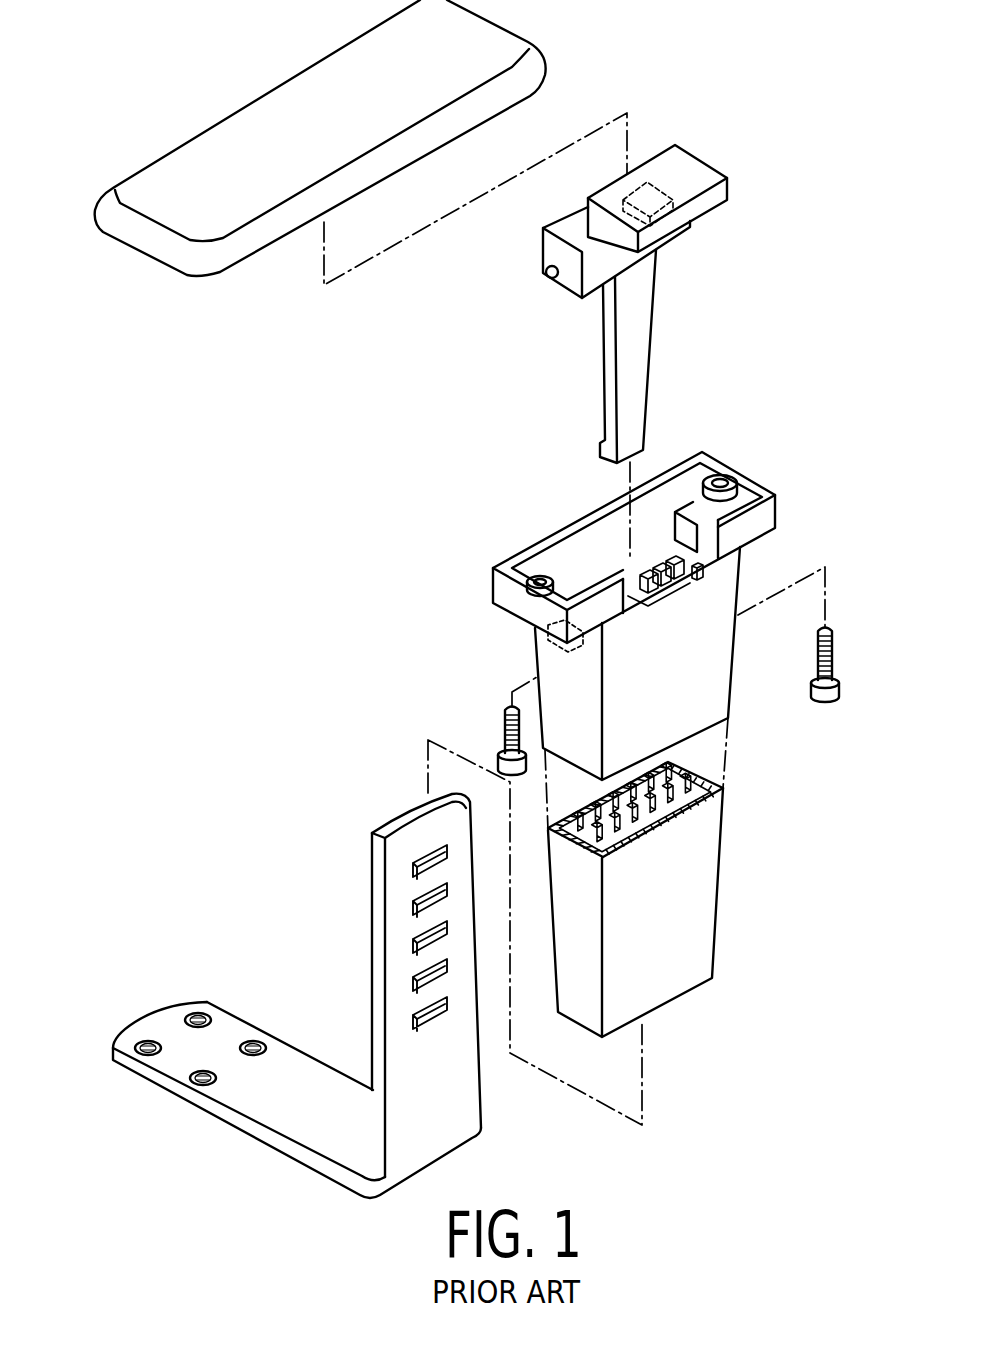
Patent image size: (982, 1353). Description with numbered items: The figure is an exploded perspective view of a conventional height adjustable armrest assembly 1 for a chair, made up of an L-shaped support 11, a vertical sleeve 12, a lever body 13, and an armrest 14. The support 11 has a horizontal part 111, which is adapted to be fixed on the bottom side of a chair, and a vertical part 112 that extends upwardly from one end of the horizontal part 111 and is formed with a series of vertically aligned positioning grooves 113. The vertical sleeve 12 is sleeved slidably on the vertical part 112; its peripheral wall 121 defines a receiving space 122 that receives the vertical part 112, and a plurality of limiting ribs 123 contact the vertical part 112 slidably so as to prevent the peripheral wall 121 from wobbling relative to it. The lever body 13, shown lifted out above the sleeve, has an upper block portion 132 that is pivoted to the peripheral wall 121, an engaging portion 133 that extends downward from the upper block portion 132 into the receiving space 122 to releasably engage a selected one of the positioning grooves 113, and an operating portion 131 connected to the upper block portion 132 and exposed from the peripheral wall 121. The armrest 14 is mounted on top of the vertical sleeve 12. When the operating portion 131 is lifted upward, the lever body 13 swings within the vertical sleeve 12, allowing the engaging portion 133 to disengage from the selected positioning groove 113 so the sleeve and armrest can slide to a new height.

The height adjustable armrest assembly 1 is at (272, 440).
The L-shaped support 11 is at (294, 996).
The horizontal part 111 is at (183, 1053).
The vertical part 112 is at (400, 873).
The positioning grooves 113 is at (418, 902).
The vertical sleeve 12 is at (624, 744).
The peripheral wall 121 is at (690, 935).
The receiving space 122 is at (587, 573).
The limiting ribs 123 is at (700, 777).
The lever body 13 is at (631, 286).
The operating portion 131 is at (685, 172).
The upper block portion 132 is at (587, 272).
The engaging portion 133 is at (627, 362).
The armrest 14 is at (152, 258).